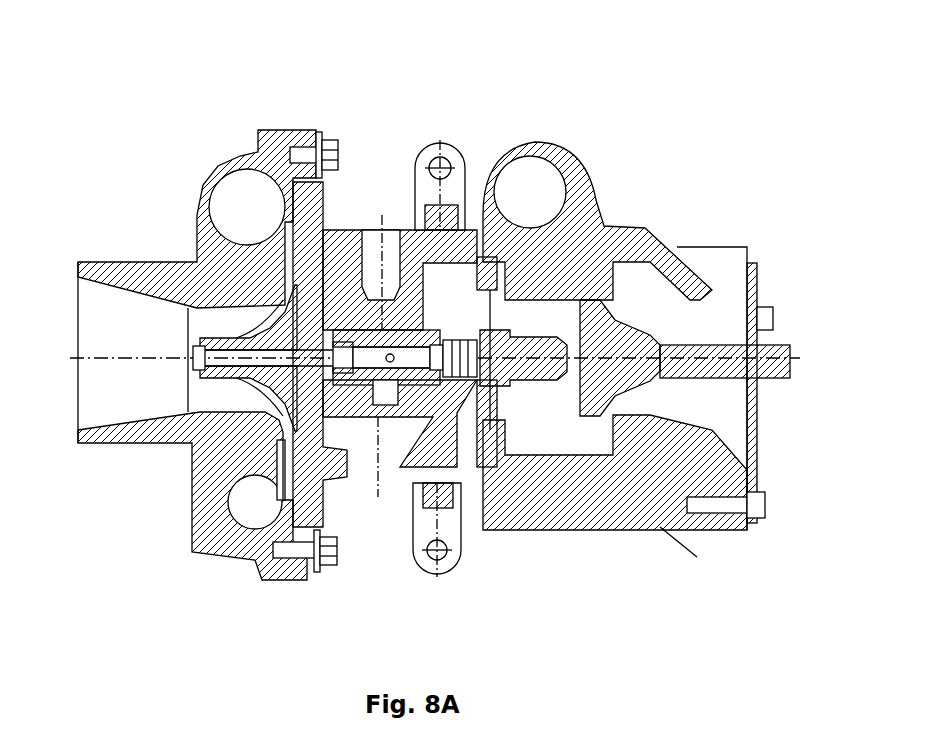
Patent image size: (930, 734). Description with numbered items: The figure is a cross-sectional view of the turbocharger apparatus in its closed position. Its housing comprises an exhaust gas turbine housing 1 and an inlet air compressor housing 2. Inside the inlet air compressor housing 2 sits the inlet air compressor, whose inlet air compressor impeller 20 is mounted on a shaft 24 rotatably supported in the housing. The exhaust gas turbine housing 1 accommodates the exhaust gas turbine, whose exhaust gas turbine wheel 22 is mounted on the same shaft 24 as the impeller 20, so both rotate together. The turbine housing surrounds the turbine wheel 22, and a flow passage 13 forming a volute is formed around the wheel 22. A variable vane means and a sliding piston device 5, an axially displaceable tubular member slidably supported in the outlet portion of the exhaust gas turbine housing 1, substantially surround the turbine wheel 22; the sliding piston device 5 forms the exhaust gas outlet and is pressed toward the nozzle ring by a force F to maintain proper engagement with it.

The exhaust gas turbine housing 1 is at (580, 100).
The inlet air compressor housing 2 is at (168, 170).
The sliding piston device 5 is at (603, 417).
The flow passage 13 is at (530, 187).
The inlet air compressor impeller 20 is at (253, 370).
The exhaust gas turbine wheel 22 is at (490, 380).
The shaft 24 is at (292, 352).
The force F is at (815, 361).